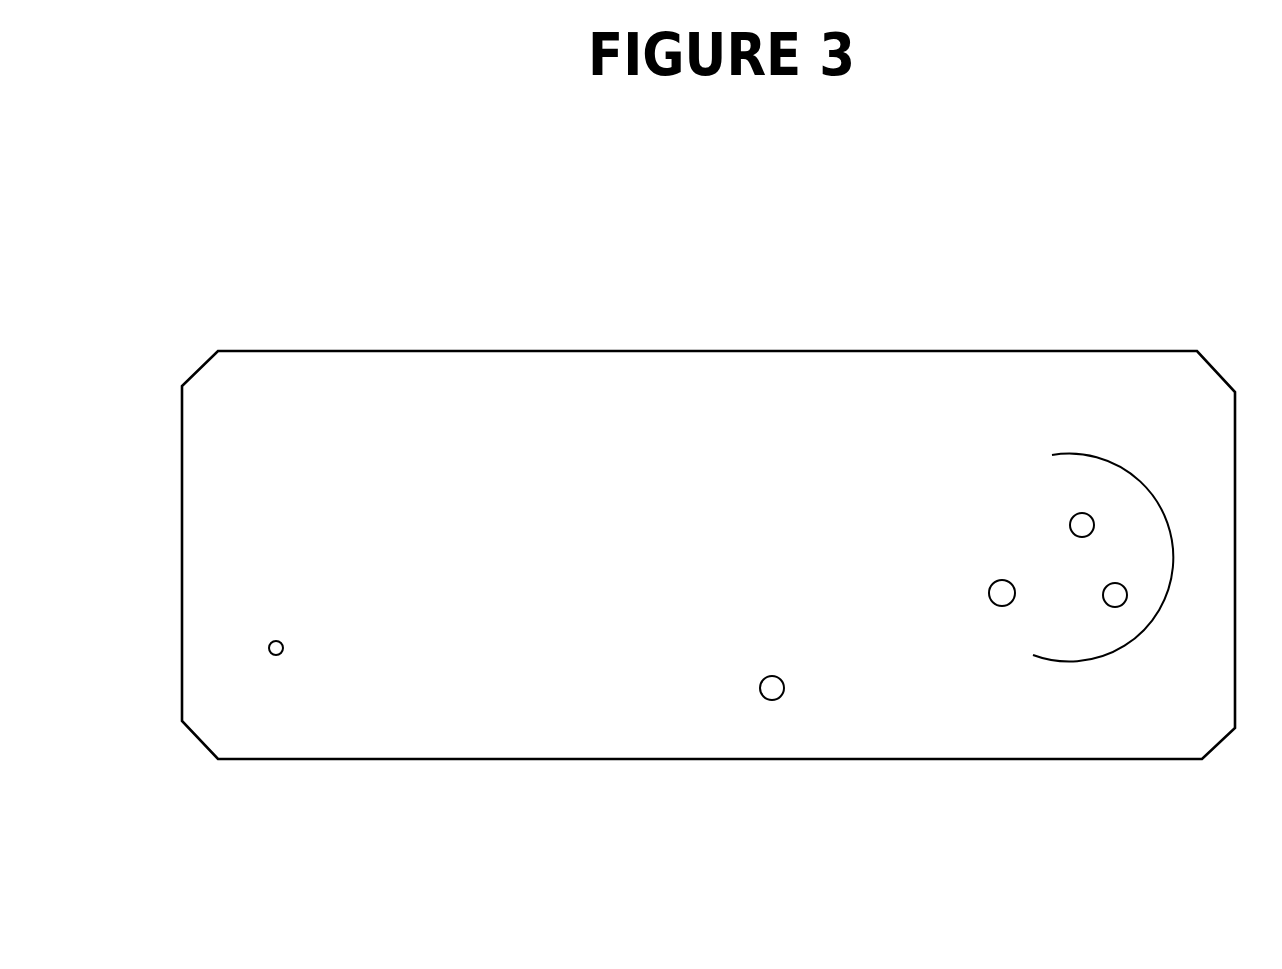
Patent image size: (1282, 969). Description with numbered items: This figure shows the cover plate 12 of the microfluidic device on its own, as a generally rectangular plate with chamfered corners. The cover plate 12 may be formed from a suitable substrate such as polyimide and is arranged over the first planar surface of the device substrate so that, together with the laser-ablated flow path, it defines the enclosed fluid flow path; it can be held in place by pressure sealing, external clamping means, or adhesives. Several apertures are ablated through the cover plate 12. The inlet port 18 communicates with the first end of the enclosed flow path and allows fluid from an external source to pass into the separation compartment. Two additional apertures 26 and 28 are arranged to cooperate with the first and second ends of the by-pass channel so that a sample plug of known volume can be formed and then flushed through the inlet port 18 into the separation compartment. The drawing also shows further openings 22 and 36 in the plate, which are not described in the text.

The cover plate 12 is at (1153, 387).
The inlet port 18 is at (1070, 518).
The fastener hole 22 is at (785, 694).
The aperture 26 is at (989, 600).
The aperture 28 is at (1114, 607).
The pin hole 36 is at (268, 655).